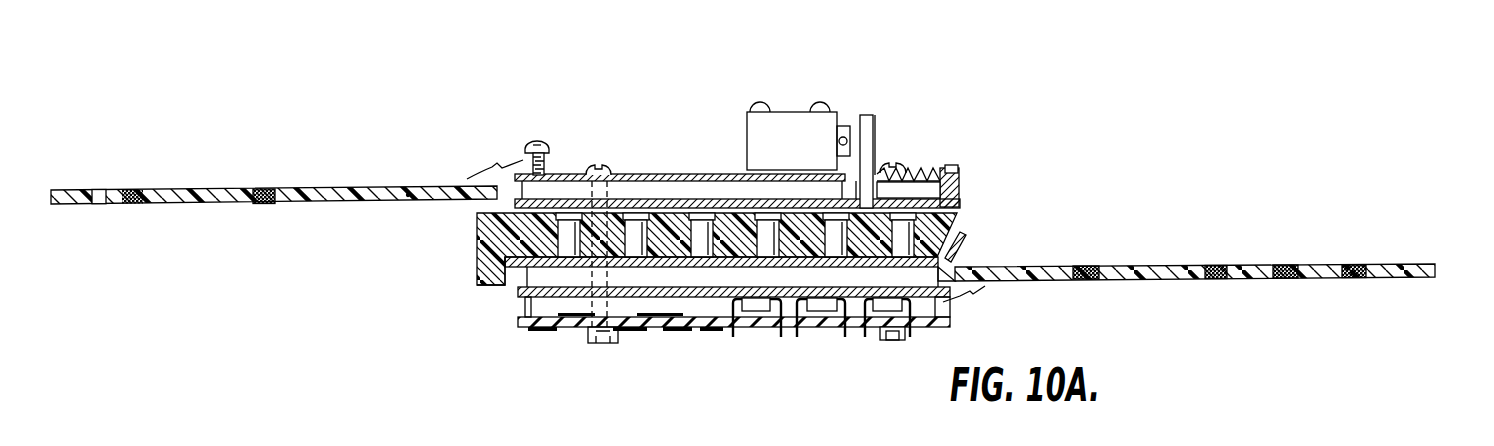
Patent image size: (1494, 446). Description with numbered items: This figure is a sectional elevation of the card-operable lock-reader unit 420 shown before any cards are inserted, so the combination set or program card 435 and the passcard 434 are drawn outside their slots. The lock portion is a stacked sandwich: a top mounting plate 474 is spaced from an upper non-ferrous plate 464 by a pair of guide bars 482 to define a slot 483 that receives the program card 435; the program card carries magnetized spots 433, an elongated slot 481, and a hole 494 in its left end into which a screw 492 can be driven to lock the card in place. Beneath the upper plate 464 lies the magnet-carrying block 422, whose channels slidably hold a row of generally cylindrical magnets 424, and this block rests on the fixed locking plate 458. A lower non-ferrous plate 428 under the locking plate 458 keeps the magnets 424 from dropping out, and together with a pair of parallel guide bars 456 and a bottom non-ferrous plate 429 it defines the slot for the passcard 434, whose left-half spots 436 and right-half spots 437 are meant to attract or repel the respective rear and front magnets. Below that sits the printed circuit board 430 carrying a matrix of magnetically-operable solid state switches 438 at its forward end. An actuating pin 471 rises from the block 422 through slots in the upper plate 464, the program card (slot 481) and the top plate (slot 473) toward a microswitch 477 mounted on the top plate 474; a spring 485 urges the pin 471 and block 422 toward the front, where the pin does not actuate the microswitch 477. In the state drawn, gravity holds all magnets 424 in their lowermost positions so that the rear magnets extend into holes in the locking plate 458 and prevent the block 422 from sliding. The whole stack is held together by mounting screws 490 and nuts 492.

The lock-reader unit 420 is at (771, 215).
The magnet-carrying block 422 is at (928, 228).
The magnet 424 is at (560, 232).
The lower non-ferrous plate 428 is at (958, 240).
The bottom non-ferrous plate 429 is at (522, 294).
The printed circuit board 430 is at (527, 328).
The magnetized spots 433 is at (264, 203).
The passcard 434 is at (1195, 248).
The program card 435 is at (274, 194).
The magnetized spots 436 is at (1089, 266).
The magnetized spots 437 is at (1222, 266).
The magnetically-operable solid state switches 438 is at (753, 308).
The guide bars 456 is at (535, 279).
The locking plate 458 is at (503, 256).
The upper non-ferrous plate 464 is at (962, 200).
The actuating pin 471 is at (873, 120).
The elongated slot 473 is at (881, 168).
The top mounting plate 474 is at (655, 175).
The microswitch 477 is at (788, 118).
The elongated slot 481 is at (408, 198).
The guide bars 482 is at (722, 190).
The slot 483 is at (925, 167).
The spring 485 is at (912, 170).
The mounting screws 490 is at (595, 170).
The screw 492 is at (542, 146).
The hole 494 is at (98, 192).